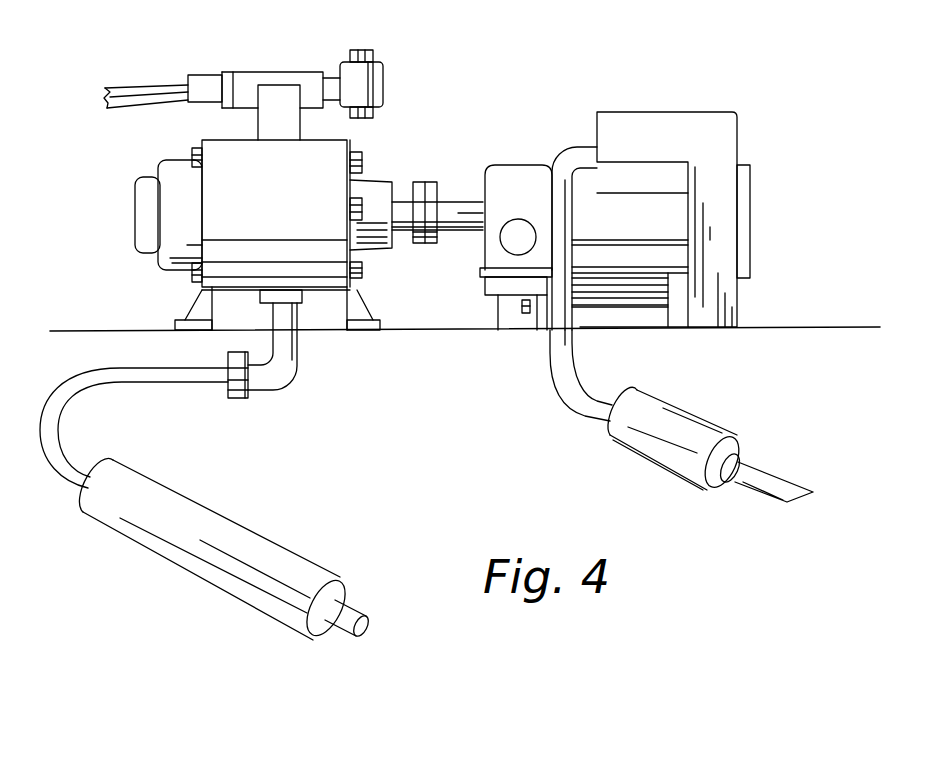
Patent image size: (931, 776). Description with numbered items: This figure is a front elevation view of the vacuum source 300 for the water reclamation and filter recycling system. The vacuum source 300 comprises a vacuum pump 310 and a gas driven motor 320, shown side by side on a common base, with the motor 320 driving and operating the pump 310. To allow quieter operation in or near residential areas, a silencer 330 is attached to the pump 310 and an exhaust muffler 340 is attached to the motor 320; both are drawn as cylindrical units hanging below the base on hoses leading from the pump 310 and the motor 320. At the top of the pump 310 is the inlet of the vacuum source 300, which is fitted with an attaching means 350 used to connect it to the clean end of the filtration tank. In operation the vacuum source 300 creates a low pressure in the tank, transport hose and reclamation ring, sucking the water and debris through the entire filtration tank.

The vacuum source 300 is at (582, 72).
The vacuum pump 310 is at (305, 165).
The gas driven motor 320 is at (663, 170).
The silencer 330 is at (208, 525).
The exhaust muffler 340 is at (670, 455).
The attaching means 350 is at (150, 86).